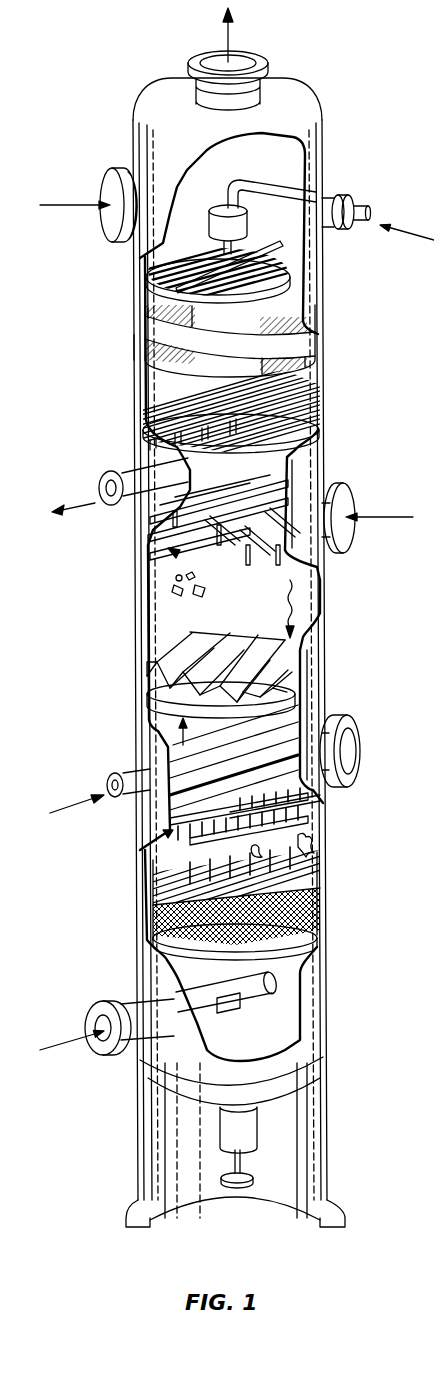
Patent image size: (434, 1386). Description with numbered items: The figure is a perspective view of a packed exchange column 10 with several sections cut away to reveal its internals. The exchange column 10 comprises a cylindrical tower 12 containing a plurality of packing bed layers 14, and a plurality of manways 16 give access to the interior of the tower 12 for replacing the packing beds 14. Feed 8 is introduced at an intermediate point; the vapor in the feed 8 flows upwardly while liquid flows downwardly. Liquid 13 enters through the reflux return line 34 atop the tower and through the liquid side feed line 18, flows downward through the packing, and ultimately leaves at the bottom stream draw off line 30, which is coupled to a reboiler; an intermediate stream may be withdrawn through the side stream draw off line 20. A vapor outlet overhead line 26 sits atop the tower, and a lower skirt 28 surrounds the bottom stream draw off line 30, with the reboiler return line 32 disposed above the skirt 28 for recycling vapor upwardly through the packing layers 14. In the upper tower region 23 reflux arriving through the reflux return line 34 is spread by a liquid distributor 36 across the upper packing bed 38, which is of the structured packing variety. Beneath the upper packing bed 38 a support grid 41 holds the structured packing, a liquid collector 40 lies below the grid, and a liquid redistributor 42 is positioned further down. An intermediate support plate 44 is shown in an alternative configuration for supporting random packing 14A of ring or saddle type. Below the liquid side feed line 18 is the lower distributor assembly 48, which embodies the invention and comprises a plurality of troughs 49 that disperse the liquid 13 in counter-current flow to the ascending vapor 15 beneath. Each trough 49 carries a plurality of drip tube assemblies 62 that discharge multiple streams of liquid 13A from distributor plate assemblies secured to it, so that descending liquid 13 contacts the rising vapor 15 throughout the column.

The feed 8 is at (72, 797).
The exchange column 10 is at (352, 100).
The cylindrical tower 12 is at (323, 150).
The liquid 13 is at (416, 236).
The multiple streams of liquid 13A is at (305, 845).
The packing bed layers 14 is at (320, 327).
The random packing 14A is at (171, 598).
The ascending vapor 15 is at (230, 33).
The manways 16 is at (104, 198).
The liquid side feed line 18 is at (130, 770).
The side stream draw off line 20 is at (145, 456).
The upper tower region 23 is at (128, 350).
The overhead line 26 is at (262, 63).
The lower skirt 28 is at (307, 1178).
The bottom stream draw off line 30 is at (250, 1128).
The reboiler return line 32 is at (130, 1010).
The reflux return line 34 is at (333, 196).
The liquid distributor 36 is at (165, 266).
The upper packing bed 38 is at (150, 327).
The liquid collector 40 is at (300, 412).
The support grid 41 is at (314, 363).
The liquid redistributor 42 is at (168, 553).
The intermediate support plate 44 is at (158, 645).
The lower distributor assembly 48 is at (314, 819).
The troughs 49 is at (300, 840).
The drip tube assemblies 62 is at (165, 834).